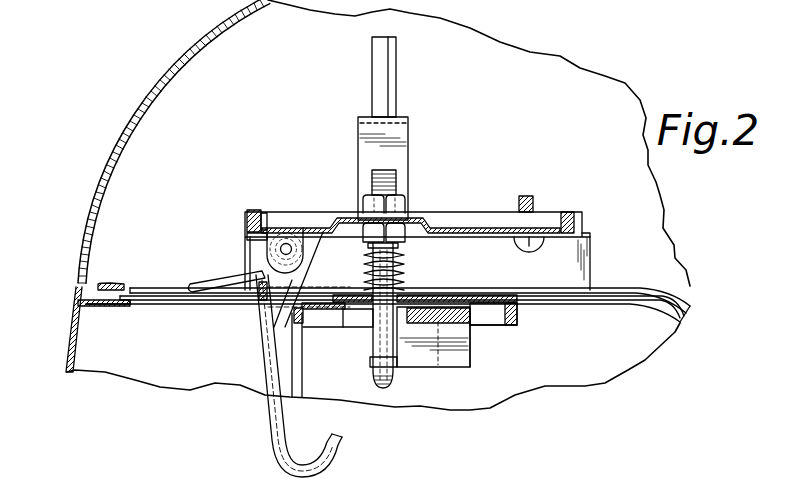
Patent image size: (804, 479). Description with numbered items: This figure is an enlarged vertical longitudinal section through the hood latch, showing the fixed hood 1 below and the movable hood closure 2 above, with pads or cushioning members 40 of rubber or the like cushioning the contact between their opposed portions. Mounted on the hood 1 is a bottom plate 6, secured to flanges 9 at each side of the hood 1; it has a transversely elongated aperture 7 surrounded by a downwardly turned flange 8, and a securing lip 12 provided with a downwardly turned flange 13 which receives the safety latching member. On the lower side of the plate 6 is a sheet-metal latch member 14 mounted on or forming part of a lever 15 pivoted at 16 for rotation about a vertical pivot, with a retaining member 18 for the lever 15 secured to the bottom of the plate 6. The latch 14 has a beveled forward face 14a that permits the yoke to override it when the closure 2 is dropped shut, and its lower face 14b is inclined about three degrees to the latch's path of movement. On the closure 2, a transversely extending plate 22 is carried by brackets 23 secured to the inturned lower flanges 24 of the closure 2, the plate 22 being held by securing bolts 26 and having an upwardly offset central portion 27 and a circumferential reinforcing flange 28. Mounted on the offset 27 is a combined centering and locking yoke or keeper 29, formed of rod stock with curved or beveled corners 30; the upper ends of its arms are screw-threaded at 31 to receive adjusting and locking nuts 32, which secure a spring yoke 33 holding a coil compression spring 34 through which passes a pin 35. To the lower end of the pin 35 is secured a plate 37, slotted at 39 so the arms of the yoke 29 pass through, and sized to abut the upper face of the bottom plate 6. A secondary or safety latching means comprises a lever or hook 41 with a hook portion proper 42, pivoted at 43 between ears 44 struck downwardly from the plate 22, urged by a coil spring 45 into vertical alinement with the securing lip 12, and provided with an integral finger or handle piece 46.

The hood 1 is at (70, 344).
The hood closure 2 is at (128, 136).
The bottom plate 6 is at (312, 326).
The transversely elongated aperture 7 is at (358, 320).
The downwardly turned flange 8 is at (342, 312).
The flanges 9 is at (112, 307).
The securing lip 12 is at (300, 306).
The downwardly turned flange 13 is at (518, 318).
The latch member 14 is at (432, 368).
The beveled forward face 14a is at (375, 362).
The lower face 14b is at (462, 370).
The lever 15 is at (484, 328).
The pivot 16 is at (439, 368).
The retaining member 18 is at (494, 327).
The transversely extending plate 22 is at (467, 227).
The brackets 23 is at (584, 258).
The inturned lower edges or flanges 24 is at (110, 284).
The securing bolts 26 is at (528, 197).
The upwardly offset central portion 27 is at (420, 221).
The circumferential reinforcing flange 28 is at (250, 214).
The combined centering and locking yoke or keeper 29 is at (375, 372).
The curved or beveled corners 30 is at (386, 392).
The screw-threaded upper ends 31 is at (396, 176).
The adjusting and locking nuts 32 is at (404, 201).
The spring yoke 33 is at (400, 130).
The coil compression spring 34 is at (368, 262).
The pin 35 is at (389, 82).
The plate 37 is at (405, 290).
The slots 39 is at (370, 300).
The pads or cushioning members 40 is at (122, 297).
The lever or hook 41 is at (262, 408).
The latching or hook portion 42 is at (338, 445).
The pivot 43 is at (287, 243).
The ears 44 is at (305, 240).
The coil spring 45 is at (314, 262).
The finger or handle piece 46 is at (212, 300).